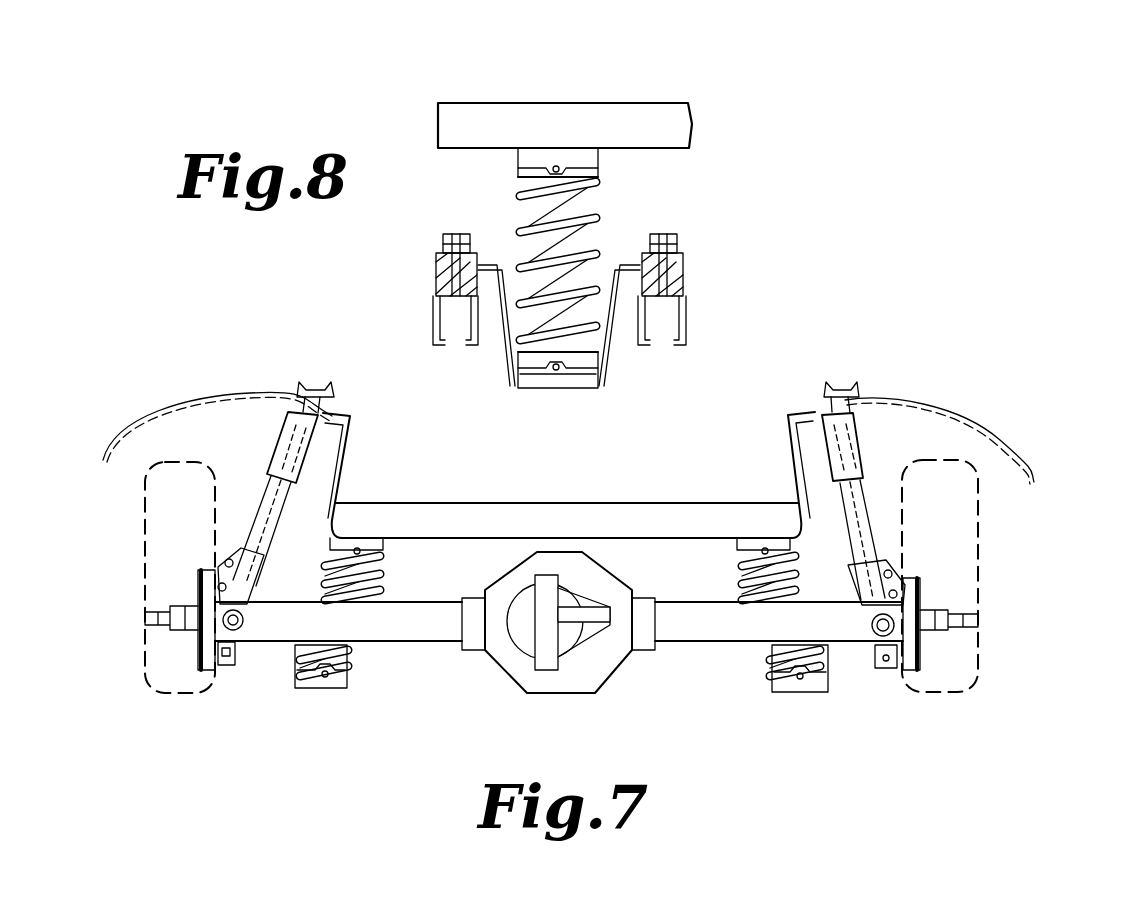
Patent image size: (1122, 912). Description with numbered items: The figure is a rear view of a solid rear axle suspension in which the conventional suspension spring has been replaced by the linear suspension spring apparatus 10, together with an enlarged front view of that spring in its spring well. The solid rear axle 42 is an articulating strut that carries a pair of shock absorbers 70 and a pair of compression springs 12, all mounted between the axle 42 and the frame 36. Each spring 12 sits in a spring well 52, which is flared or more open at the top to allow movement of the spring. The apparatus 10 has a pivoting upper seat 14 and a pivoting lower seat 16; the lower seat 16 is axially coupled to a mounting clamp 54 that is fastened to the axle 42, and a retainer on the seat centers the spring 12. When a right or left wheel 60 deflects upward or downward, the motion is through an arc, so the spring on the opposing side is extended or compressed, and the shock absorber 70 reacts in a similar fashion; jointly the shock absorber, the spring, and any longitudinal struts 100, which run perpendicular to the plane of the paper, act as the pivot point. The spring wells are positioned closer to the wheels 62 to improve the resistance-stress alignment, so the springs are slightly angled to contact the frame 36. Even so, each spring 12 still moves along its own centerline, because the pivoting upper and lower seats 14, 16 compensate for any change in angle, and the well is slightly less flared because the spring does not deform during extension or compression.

In FIG. 8, the linear suspension spring apparatus 10 is at (480, 187).
In FIG. 8, the spring 12 is at (596, 252).
In FIG. 7, the spring 12 is at (372, 588).
In FIG. 8, the pivoting upper seat 14 is at (592, 176).
In FIG. 7, the pivoting upper seat 14 is at (378, 545).
In FIG. 8, the pivoting lower seat 16 is at (565, 376).
In FIG. 7, the pivoting lower seat 16 is at (343, 674).
In FIG. 8, the frame 36 is at (590, 118).
In FIG. 7, the frame 36 is at (652, 512).
In FIG. 7, the solid rear axle 42 is at (268, 630).
In FIG. 8, the spring well 52 is at (512, 300).
In FIG. 7, the spring well 52 is at (815, 671).
In FIG. 8, the mounting clamp 54 is at (545, 382).
In FIG. 7, the mounting clamp 54 is at (305, 683).
In FIG. 7, the wheel 60 is at (160, 503).
In FIG. 7, the wheels 62 is at (163, 626).
In FIG. 7, the shock absorber 70 is at (290, 428).
In FIG. 7, the longitudinal strut 100 is at (227, 630).